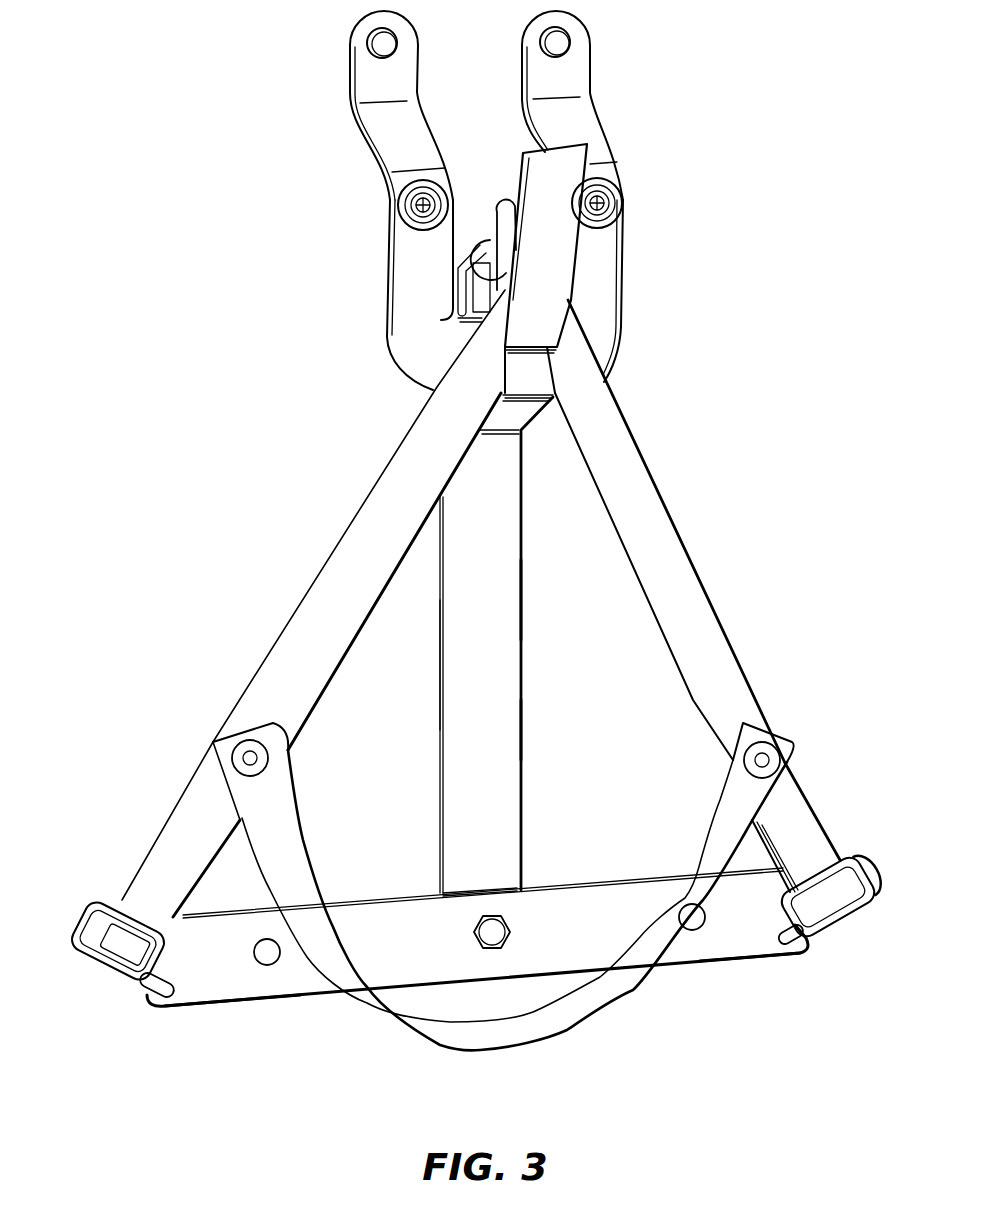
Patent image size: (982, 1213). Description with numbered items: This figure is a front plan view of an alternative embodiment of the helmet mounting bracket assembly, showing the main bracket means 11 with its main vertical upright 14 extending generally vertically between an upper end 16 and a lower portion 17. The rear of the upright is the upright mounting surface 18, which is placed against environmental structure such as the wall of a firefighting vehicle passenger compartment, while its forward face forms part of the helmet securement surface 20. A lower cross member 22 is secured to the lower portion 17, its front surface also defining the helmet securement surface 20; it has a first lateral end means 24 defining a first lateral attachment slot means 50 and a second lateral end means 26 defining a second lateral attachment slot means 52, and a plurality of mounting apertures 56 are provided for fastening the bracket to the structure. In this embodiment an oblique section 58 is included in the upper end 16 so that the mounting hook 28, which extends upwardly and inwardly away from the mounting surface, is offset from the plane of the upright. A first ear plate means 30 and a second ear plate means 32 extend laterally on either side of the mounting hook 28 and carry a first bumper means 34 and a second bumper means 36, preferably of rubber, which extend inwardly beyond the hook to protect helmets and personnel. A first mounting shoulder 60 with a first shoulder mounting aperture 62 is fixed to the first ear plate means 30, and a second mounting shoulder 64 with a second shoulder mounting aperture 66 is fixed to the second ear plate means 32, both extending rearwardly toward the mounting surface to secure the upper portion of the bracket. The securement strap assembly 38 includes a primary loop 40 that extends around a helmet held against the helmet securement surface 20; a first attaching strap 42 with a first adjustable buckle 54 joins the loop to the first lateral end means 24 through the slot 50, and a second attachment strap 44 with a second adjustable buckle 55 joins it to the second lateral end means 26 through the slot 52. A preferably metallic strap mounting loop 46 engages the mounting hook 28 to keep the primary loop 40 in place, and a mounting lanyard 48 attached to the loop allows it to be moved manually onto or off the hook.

The main bracket means 11 is at (522, 733).
The main vertical upright 14 is at (474, 677).
The upper end 16 is at (507, 505).
The lower portion 17 is at (490, 887).
The upright mounting surface 18 is at (438, 662).
The helmet securement surface 20 is at (510, 598).
The lower cross member 22 is at (570, 929).
The first lateral end means 24 is at (183, 1000).
The second lateral end means 26 is at (763, 943).
The mounting hook 28 is at (504, 205).
The first ear plate means 30 is at (393, 257).
The second ear plate means 32 is at (617, 255).
The first bumper means 34 is at (400, 190).
The second bumper means 36 is at (610, 183).
The securement strap assembly 38 is at (615, 1002).
The primary loop 40 is at (763, 747).
The first attaching strap 42 is at (150, 853).
The second attachment strap 44 is at (787, 797).
The strap mounting loop 46 is at (497, 277).
The mounting lanyard 48 is at (565, 222).
The first lateral attachment slot means 50 is at (140, 993).
The second lateral attachment slot means 52 is at (803, 950).
The first adjustable buckle 54 is at (100, 910).
The second adjustable buckle 55 is at (838, 860).
The mounting apertures 56 is at (477, 927).
The oblique section 58 is at (523, 413).
The first mounting shoulder 60 is at (383, 120).
The first shoulder mounting aperture 62 is at (375, 42).
The second mounting shoulder 64 is at (580, 117).
The second shoulder mounting aperture 66 is at (563, 38).